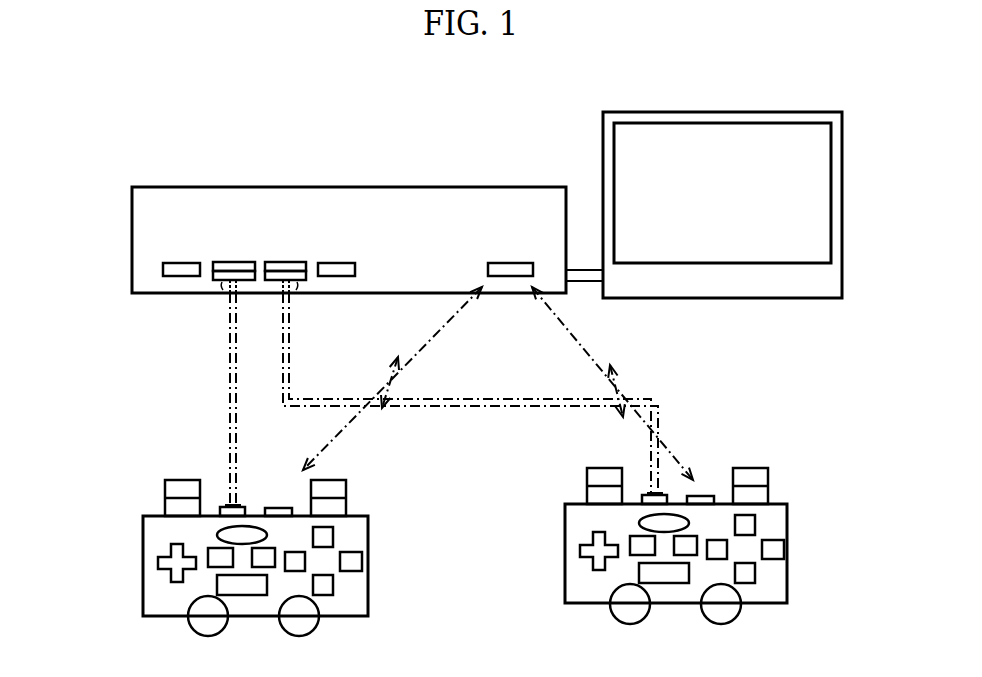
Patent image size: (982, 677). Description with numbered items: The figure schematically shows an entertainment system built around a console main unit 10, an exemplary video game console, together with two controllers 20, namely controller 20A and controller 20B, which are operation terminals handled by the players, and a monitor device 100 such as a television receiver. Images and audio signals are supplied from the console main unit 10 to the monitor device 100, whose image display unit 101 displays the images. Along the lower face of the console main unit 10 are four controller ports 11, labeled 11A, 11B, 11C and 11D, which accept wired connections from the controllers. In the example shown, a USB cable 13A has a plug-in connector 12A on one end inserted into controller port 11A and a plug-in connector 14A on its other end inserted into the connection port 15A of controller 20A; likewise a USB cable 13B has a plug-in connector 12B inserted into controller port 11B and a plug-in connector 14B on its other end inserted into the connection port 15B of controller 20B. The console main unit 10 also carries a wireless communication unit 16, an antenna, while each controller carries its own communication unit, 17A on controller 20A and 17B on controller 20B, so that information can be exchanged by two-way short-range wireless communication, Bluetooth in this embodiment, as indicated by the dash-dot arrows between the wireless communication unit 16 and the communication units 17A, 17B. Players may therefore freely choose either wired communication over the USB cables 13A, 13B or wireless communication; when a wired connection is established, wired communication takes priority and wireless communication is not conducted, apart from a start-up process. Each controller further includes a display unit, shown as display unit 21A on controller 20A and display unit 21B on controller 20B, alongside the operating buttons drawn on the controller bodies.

The console main unit 10 is at (427, 187).
The controller ports 11 is at (261, 180).
The controller port 11A is at (234, 262).
The controller port 11B is at (285, 262).
The controller port 11C is at (183, 263).
The controller port 11D is at (340, 263).
The plug-in connector 12A is at (218, 293).
The plug-in connector 12B is at (300, 293).
The USB cable 13A is at (228, 365).
The USB cable 13B is at (296, 385).
The plug-in connector 14A is at (216, 506).
The plug-in connector 14B is at (640, 487).
The connection port 15A is at (222, 509).
The connection port 15B is at (648, 496).
The wireless communication unit 16 is at (510, 263).
The communication unit 17A is at (268, 508).
The communication unit 17B is at (707, 496).
The controllers 20 is at (419, 520).
The controller 20A is at (271, 520).
The controller 20B is at (615, 522).
The display unit 21A is at (218, 537).
The display unit 21B is at (642, 524).
The monitor device 100 is at (803, 114).
The image display unit 101 is at (807, 197).